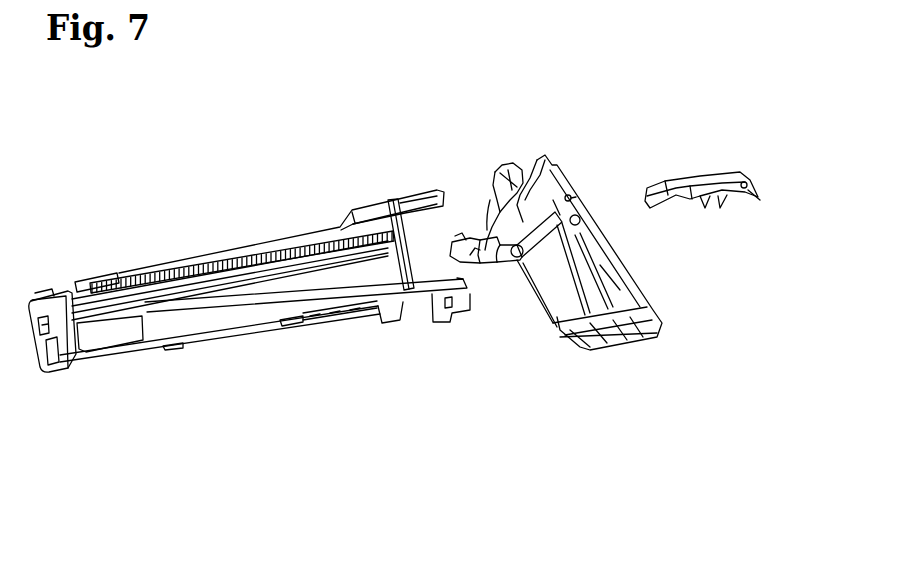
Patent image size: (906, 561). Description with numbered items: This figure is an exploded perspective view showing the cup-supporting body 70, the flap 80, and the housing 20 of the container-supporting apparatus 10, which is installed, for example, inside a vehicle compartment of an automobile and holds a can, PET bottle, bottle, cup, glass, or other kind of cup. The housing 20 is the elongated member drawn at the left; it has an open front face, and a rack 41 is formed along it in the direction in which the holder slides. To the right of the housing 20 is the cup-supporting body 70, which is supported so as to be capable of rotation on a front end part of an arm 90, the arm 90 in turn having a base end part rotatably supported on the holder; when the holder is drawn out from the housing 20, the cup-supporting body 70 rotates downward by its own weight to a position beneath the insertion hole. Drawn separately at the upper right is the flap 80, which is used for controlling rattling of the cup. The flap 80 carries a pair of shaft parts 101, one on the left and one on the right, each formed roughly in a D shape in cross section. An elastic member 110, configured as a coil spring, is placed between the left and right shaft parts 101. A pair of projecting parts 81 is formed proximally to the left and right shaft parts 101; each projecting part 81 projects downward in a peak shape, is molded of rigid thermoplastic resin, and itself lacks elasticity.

The container-supporting apparatus 10 is at (192, 112).
The housing 20 is at (183, 348).
The rack 41 is at (200, 262).
The cup-supporting body 70 is at (612, 348).
The flap 80 is at (688, 178).
The projecting parts 81 is at (718, 200).
The arm 90 is at (493, 275).
The shaft part 101 is at (745, 178).
The elastic member 110 is at (750, 198).